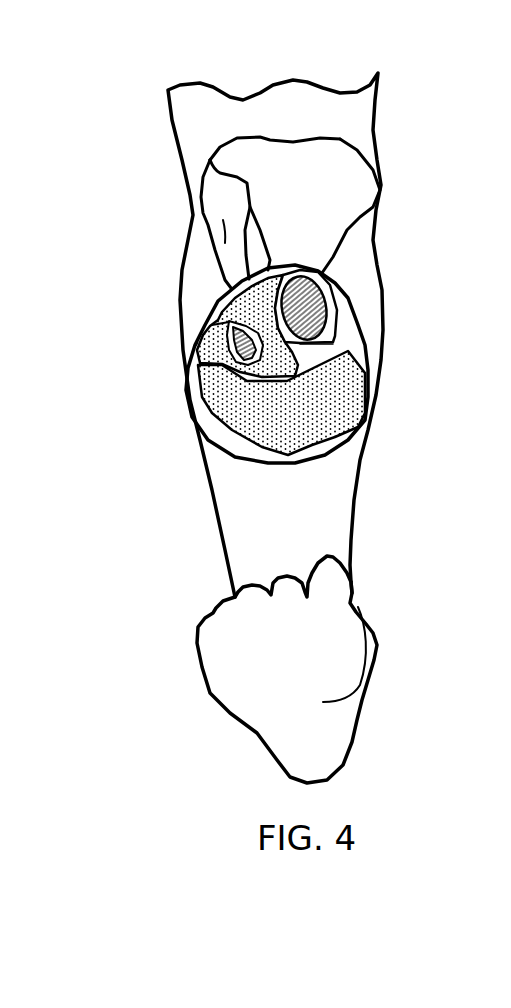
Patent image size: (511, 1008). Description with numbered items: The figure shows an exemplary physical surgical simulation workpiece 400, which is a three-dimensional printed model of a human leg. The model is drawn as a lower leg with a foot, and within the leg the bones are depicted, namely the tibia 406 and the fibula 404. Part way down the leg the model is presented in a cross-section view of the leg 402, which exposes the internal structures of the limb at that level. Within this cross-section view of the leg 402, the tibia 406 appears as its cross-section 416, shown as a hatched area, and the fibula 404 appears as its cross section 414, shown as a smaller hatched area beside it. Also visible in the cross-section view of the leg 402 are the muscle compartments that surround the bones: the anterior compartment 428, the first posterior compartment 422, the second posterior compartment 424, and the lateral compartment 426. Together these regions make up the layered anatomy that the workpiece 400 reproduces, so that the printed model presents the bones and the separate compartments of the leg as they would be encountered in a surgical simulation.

The physical surgical simulation workpiece 400 is at (116, 139).
The cross-section view of the leg 402 is at (318, 467).
The fibula 404 is at (225, 239).
The tibia 406 is at (335, 192).
The fibula cross section 414 is at (218, 320).
The tibia cross-section 416 is at (332, 293).
The first posterior compartment 422 is at (303, 353).
The second posterior compartment 424 is at (222, 393).
The lateral compartment 426 is at (212, 345).
The anterior compartment 428 is at (250, 302).